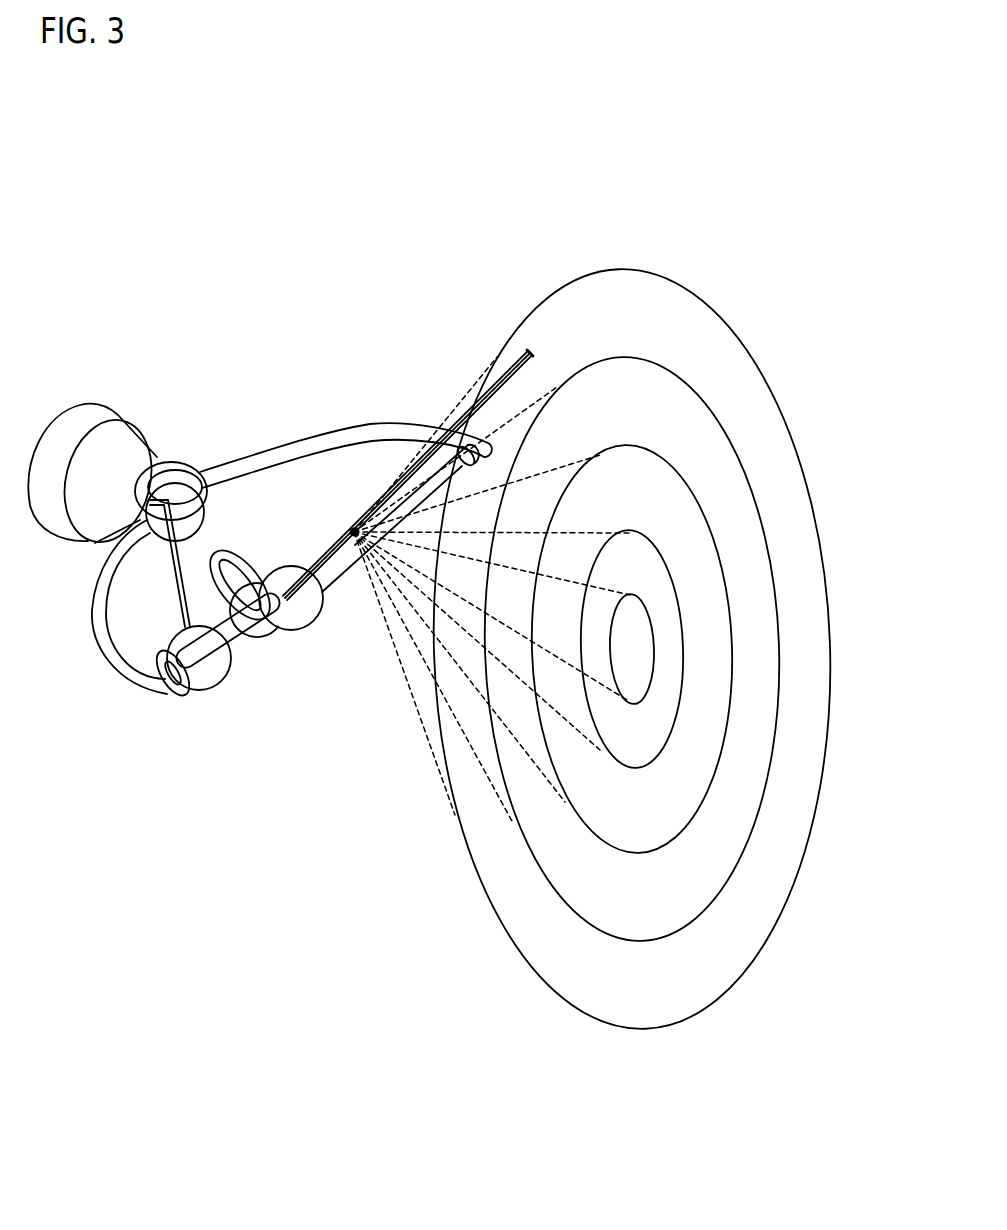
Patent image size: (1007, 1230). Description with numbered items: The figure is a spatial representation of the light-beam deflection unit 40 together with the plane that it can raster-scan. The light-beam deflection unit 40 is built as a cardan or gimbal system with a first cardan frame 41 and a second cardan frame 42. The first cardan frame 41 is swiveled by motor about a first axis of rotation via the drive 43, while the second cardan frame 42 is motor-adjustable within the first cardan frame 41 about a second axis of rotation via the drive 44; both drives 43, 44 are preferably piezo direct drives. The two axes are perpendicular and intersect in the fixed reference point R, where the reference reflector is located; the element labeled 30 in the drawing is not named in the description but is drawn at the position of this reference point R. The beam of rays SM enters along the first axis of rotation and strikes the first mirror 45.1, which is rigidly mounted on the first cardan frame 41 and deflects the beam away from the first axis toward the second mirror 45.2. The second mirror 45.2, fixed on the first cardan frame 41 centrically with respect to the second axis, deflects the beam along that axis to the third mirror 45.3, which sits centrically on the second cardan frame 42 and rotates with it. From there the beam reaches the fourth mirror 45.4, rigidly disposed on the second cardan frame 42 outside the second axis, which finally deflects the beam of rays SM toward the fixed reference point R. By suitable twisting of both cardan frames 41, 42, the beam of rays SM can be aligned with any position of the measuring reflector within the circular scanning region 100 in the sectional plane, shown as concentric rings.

The measuring point / marker 30 is at (349, 530).
The light-beam deflection unit 40 is at (142, 878).
The first cardan frame 41 is at (86, 604).
The second cardan frame 42 is at (405, 493).
The drive 43 is at (116, 405).
The drive 44 is at (191, 697).
The first mirror 45.1 is at (195, 482).
The second mirror 45.2 is at (234, 686).
The third mirror 45.3 is at (281, 654).
The fourth mirror 45.4 is at (276, 570).
The circular scanning region 100 is at (694, 1022).
The fixed reference point R is at (353, 527).
The beam of rays SM is at (506, 368).